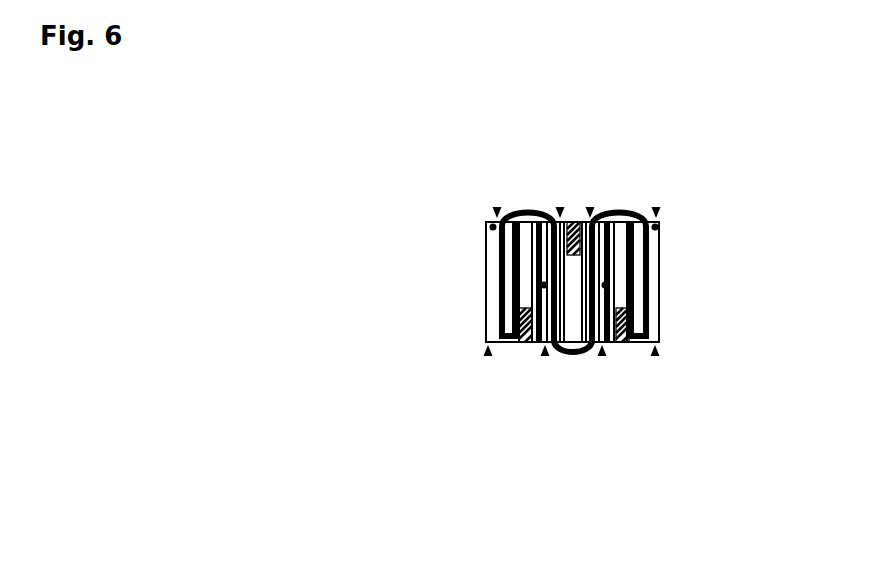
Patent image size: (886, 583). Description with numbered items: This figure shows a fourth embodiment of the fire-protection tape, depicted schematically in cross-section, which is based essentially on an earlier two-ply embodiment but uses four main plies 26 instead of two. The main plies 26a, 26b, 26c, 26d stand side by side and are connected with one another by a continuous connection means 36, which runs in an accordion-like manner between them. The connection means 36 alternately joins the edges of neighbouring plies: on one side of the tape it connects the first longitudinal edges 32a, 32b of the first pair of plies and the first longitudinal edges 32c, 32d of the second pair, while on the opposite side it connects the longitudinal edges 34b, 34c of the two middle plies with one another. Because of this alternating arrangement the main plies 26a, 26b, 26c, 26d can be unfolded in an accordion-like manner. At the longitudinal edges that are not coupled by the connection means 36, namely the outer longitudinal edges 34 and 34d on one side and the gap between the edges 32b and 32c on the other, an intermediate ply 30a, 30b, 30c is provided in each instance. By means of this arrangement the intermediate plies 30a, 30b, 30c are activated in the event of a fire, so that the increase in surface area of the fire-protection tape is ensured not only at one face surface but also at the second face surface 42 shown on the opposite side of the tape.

The second face surface 42 is at (575, 76).
The main plies 26 is at (576, 466).
The main ply 26a is at (490, 227).
The main ply 26b is at (541, 286).
The main ply 26c is at (608, 286).
The main ply 26d is at (659, 227).
The intermediate ply 30a is at (525, 342).
The intermediate ply 30b is at (573, 222).
The intermediate ply 30c is at (621, 342).
The first longitudinal edge 32a is at (488, 356).
The first longitudinal edge 32b is at (545, 356).
The first longitudinal edge 32c is at (602, 356).
The first longitudinal edge 32d is at (655, 356).
The first longitudinal edge 34 is at (497, 208).
The first longitudinal edge 34b is at (560, 208).
The first longitudinal edge 34c is at (590, 208).
The first longitudinal edge 34d is at (656, 208).
The connection means 36 is at (663, 320).